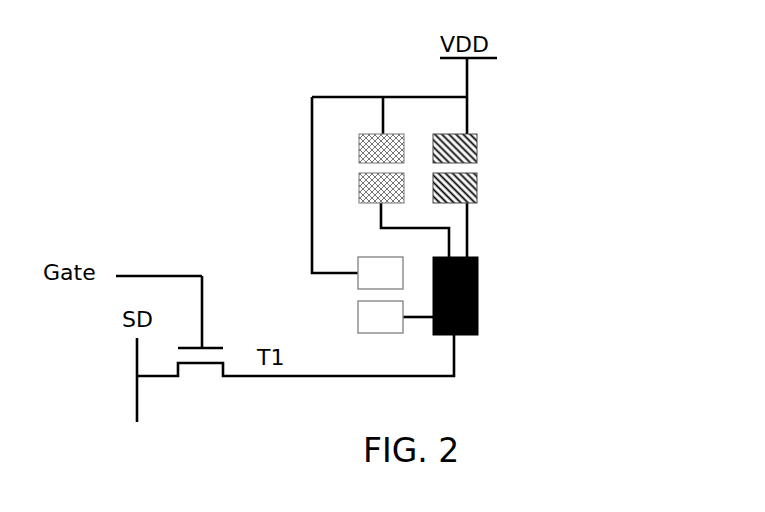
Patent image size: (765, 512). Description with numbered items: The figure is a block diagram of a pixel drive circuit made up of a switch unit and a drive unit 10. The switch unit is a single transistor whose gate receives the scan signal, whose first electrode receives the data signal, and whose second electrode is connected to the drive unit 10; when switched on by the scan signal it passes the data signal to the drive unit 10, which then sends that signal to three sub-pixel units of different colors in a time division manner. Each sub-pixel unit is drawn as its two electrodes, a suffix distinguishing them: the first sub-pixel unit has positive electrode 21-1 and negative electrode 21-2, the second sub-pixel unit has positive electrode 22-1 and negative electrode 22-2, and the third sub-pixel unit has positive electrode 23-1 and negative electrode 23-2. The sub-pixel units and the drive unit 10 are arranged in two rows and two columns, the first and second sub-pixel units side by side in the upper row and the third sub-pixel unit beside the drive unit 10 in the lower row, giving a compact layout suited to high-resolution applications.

The negative electrode of the first sub-pixel unit 21-2 is at (365, 145).
The positive electrode of the first sub-pixel unit 21-1 is at (365, 193).
The negative electrode of the second sub-pixel unit 22-2 is at (478, 140).
The positive electrode of the second sub-pixel unit 22-1 is at (478, 188).
The negative electrode of the third sub-pixel unit 23-2 is at (374, 277).
The positive electrode of the third sub-pixel unit 23-1 is at (370, 313).
The drive unit 10 is at (478, 287).